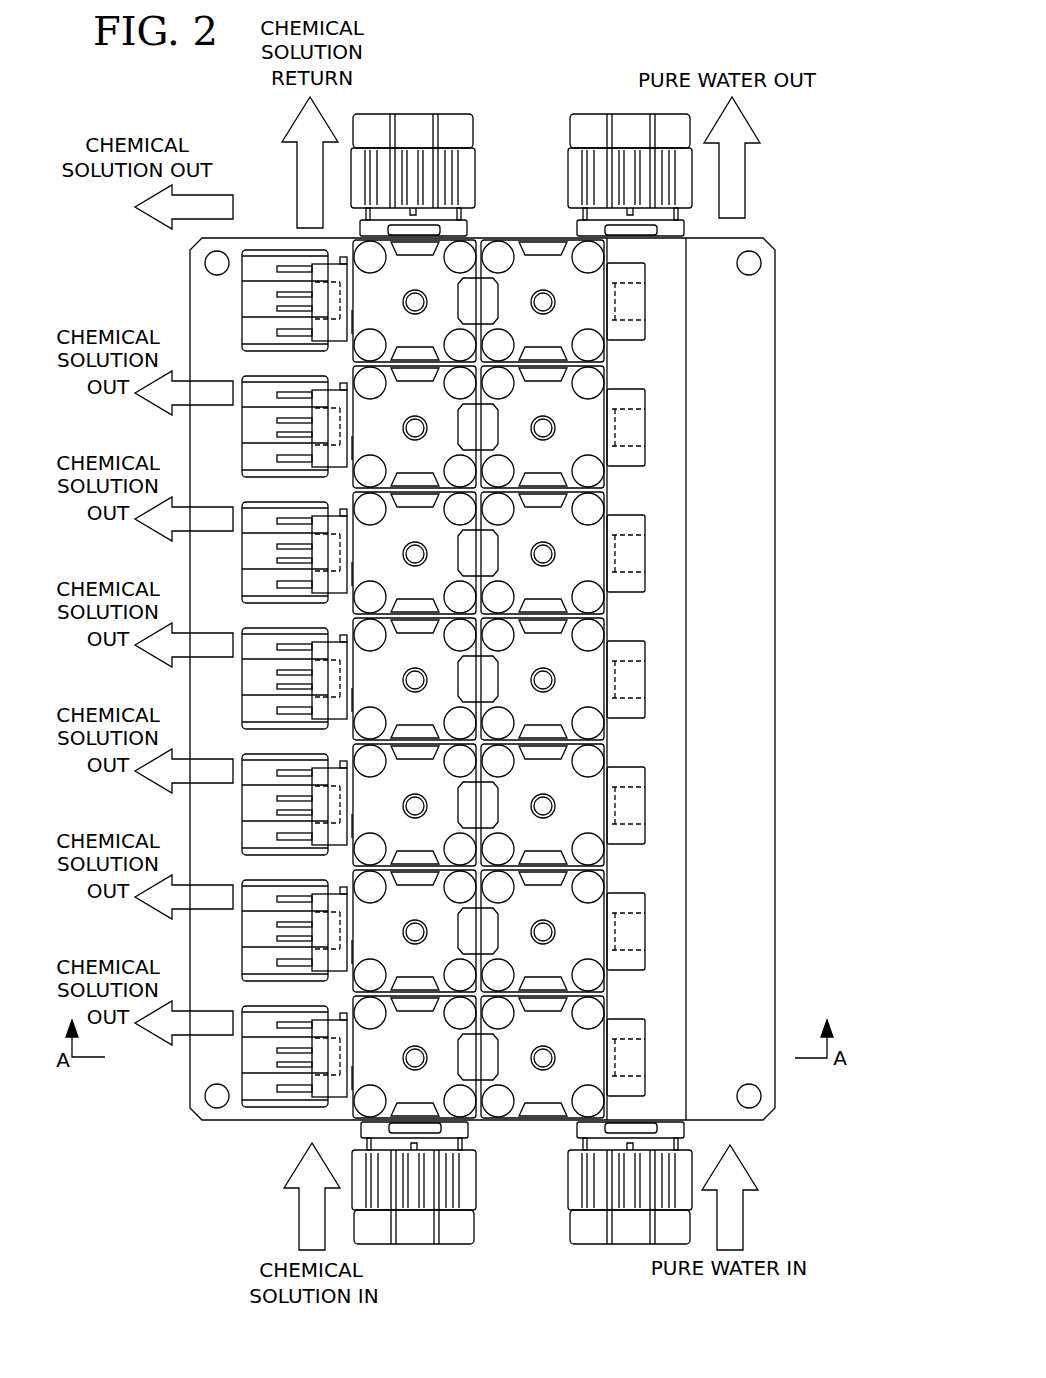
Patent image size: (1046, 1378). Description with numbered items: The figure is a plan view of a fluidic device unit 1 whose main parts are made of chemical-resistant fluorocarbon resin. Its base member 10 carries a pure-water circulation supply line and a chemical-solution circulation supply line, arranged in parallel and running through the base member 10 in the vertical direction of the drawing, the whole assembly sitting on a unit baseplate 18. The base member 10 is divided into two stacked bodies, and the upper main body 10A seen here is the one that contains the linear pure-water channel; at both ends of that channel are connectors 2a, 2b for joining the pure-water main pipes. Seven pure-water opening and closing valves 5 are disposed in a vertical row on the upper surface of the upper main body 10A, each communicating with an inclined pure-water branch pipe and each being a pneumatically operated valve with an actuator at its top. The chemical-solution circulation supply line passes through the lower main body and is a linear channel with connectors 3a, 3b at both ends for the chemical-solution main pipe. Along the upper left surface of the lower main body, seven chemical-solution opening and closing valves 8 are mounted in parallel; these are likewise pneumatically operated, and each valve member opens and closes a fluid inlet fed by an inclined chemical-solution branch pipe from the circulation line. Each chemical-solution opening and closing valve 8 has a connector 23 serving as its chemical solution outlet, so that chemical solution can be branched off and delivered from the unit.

The fluidic device unit 1 is at (815, 162).
The connector 2a is at (580, 1219).
The connector 2b is at (579, 136).
The connector 3a is at (463, 1228).
The connector 3b is at (452, 130).
The pure-water opening and closing valve 5 is at (582, 303).
The chemical-solution opening and closing valve 8 is at (357, 322).
The base member 10 is at (700, 866).
The upper main body 10A is at (670, 775).
The unit baseplate 18 is at (767, 907).
The connector 23 is at (242, 297).